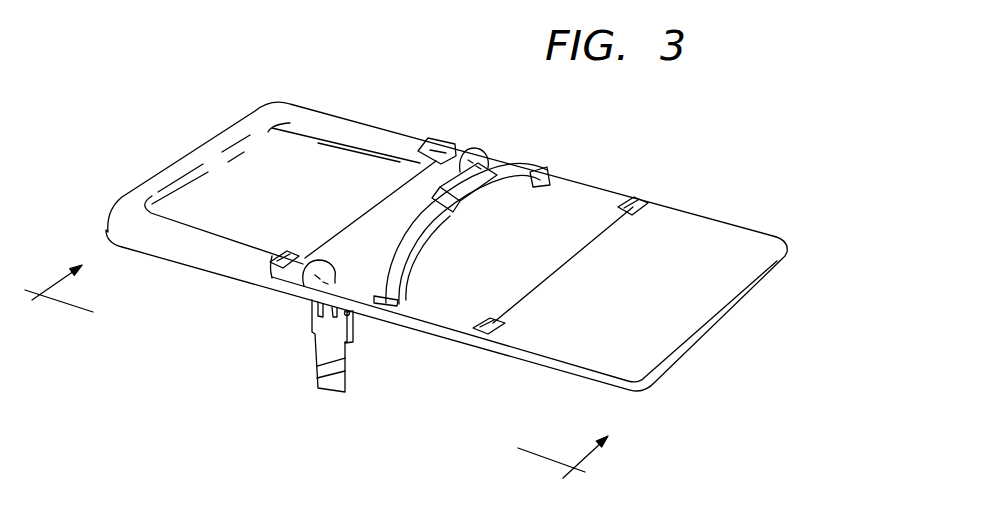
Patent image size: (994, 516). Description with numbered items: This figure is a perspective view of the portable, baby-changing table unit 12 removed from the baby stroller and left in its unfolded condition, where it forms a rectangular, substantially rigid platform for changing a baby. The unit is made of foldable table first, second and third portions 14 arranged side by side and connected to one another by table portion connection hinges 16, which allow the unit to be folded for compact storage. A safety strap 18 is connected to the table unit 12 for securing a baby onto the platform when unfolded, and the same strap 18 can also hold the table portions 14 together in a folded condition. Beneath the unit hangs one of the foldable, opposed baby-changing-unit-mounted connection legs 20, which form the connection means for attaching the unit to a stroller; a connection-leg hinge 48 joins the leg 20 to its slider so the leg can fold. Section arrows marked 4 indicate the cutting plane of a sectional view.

The portable, baby-changing table unit 12 is at (164, 138).
The foldable table portions 14 is at (300, 160).
The table portion connection hinges 16 is at (428, 140).
The safety strap 18 is at (510, 163).
The baby-changing-unit-mounted connection legs 20 is at (318, 346).
The connection-leg hinges 48 is at (353, 313).
The section line 4- 4 is at (316, 379).